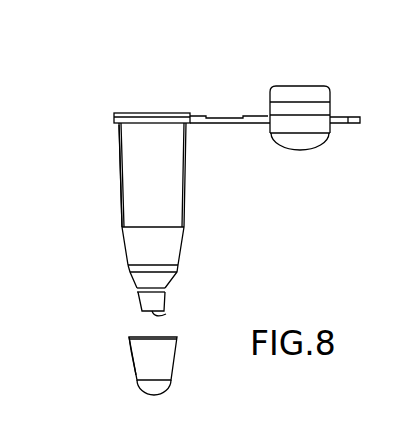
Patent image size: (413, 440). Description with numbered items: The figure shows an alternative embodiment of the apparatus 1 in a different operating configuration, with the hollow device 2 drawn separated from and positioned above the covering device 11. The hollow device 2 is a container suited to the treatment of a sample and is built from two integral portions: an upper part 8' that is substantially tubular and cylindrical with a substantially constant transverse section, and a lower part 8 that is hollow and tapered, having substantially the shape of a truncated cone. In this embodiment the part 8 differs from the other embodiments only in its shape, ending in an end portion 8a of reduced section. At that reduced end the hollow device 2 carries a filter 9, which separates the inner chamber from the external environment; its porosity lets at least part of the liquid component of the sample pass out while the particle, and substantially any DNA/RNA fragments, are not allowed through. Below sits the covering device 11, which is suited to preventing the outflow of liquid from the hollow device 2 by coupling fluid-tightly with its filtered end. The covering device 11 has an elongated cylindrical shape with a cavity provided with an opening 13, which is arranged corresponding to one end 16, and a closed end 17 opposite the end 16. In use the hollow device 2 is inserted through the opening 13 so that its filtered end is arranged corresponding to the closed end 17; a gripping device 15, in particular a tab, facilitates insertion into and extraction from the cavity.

The apparatus 1 is at (165, 97).
The hollow device 2 is at (200, 197).
The part 8 is at (182, 269).
The part 8' is at (85, 176).
The end portion 8a is at (137, 292).
The filter 9 is at (165, 313).
The covering device 11 is at (179, 365).
The opening 13 is at (161, 335).
The gripping device 15 is at (140, 362).
The end 16 is at (120, 343).
The closed end 17 is at (172, 388).